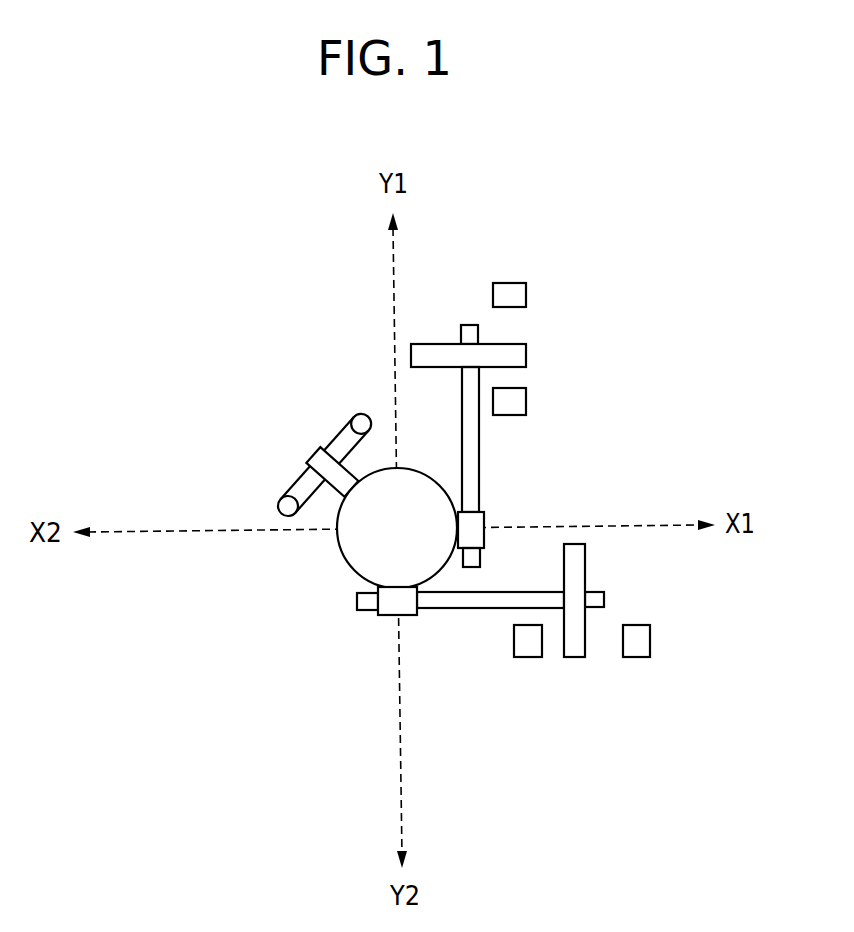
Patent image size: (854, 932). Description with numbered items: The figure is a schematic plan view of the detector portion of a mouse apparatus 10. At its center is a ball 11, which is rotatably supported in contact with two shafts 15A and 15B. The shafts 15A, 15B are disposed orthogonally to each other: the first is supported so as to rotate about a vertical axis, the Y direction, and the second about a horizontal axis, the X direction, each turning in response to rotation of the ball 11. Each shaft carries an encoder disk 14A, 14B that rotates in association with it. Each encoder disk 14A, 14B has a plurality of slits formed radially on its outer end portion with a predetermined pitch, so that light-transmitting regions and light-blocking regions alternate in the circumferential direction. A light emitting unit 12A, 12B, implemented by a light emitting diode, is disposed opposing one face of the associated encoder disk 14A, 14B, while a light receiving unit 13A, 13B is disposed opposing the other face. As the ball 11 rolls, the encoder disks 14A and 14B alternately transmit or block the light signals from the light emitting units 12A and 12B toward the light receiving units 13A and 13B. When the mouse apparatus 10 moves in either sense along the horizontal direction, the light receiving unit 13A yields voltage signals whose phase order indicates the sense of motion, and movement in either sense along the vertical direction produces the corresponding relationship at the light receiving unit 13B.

The mouse apparatus 10 is at (648, 256).
The ball 11 is at (336, 548).
The light emitting unit 12A is at (526, 399).
The light emitting unit 12B is at (522, 657).
The light receiving unit 13A is at (526, 292).
The light receiving unit 13B is at (633, 657).
The encoder disk 14A is at (526, 352).
The encoder disk 14B is at (572, 657).
The shaft 15A is at (485, 514).
The shaft 15B is at (405, 615).